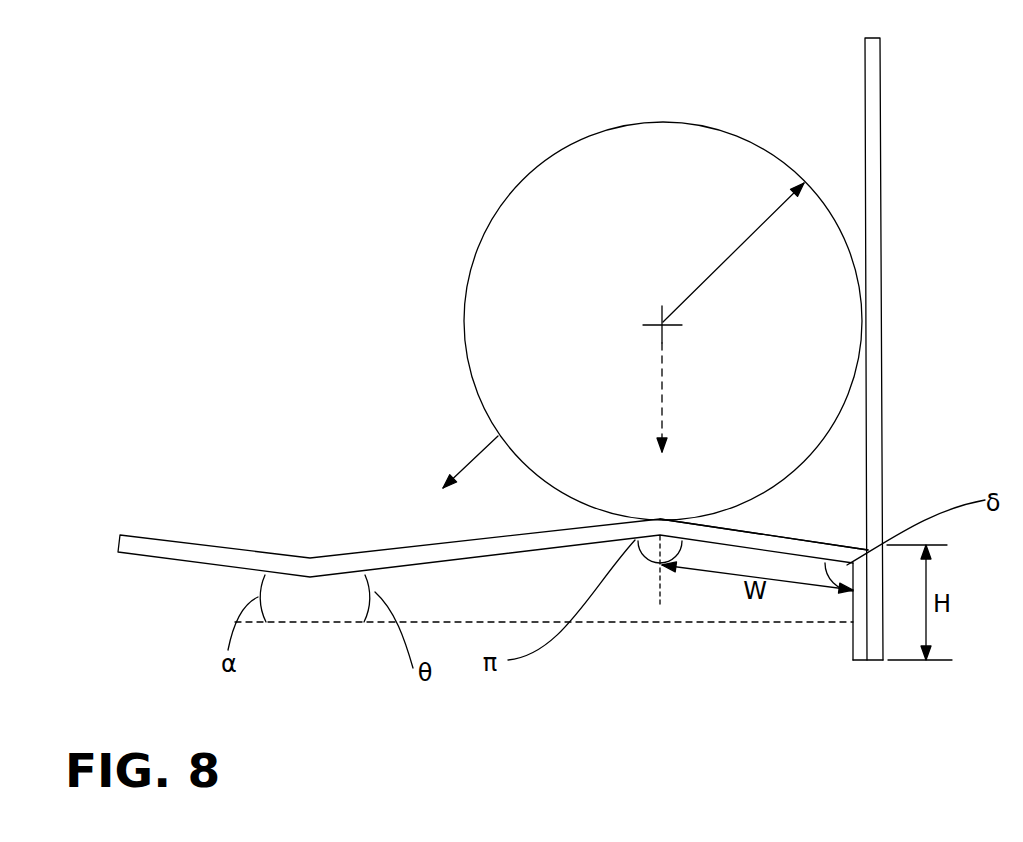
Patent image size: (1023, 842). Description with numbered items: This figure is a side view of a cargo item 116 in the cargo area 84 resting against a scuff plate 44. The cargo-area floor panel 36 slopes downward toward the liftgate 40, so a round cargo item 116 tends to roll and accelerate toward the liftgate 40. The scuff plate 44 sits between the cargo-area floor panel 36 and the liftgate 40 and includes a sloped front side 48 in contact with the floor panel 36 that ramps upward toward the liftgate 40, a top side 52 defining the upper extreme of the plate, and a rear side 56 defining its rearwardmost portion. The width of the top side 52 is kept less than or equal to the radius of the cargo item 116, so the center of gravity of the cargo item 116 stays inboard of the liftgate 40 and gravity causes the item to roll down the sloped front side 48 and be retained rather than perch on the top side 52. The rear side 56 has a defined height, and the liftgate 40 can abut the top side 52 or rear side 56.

The cargo-area floor panel 36 is at (128, 545).
The sloped front side 48 is at (370, 552).
The cargo item 116 is at (542, 163).
The cargo area 84 is at (343, 267).
The liftgate 40 is at (870, 62).
The top side 52 is at (795, 537).
The scuff plate 44 is at (842, 547).
The rear side 56 is at (857, 650).